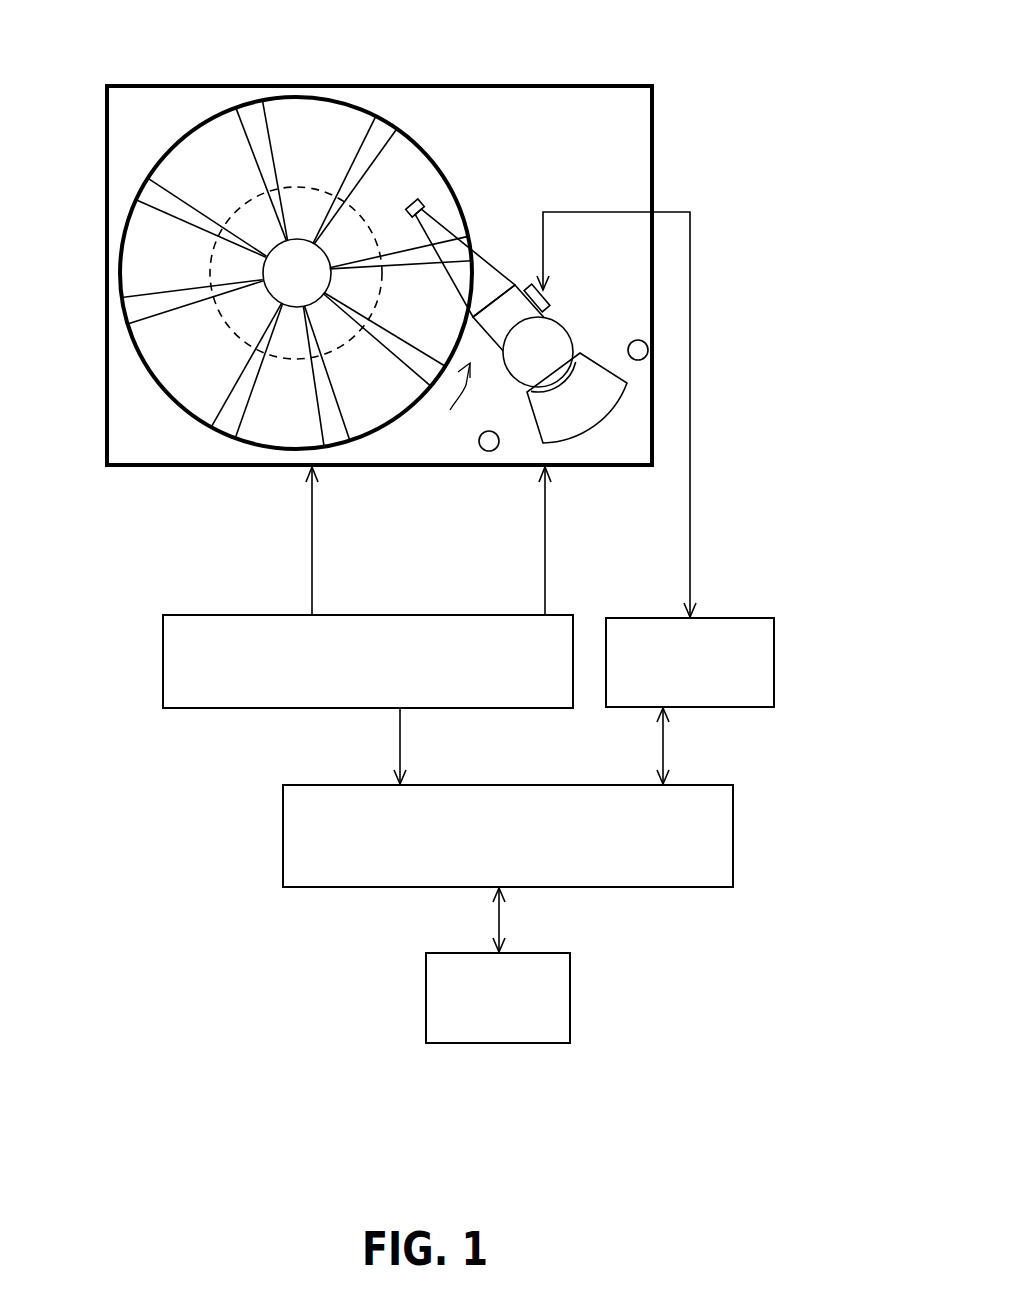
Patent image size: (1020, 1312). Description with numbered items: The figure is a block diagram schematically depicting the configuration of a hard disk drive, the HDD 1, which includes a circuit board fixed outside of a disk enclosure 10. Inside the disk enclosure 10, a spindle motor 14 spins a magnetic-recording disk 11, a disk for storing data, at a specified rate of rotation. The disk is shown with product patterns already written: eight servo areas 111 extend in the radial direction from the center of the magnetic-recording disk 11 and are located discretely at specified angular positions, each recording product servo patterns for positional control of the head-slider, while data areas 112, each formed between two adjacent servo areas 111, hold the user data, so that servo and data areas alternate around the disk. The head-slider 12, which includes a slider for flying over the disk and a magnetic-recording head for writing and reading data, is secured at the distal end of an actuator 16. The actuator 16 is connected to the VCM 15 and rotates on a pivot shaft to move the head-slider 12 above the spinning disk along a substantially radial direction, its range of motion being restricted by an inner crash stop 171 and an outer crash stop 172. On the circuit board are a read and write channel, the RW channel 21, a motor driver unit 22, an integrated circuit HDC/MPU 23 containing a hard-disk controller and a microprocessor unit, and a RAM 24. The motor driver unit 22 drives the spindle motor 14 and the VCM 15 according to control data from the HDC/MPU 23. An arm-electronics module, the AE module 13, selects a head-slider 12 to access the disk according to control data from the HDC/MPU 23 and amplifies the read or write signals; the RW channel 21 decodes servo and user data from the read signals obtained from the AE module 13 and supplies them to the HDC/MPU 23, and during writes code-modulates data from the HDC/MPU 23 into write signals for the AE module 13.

The HDD 1 is at (515, 45).
The disk enclosure 10 is at (105, 283).
The magnetic-recording disk 11 is at (349, 101).
The head-slider 12 is at (420, 201).
The arm-electronics module 13 is at (550, 300).
The spindle motor 14 is at (255, 196).
The VCM 15 is at (607, 366).
The actuator 16 is at (448, 399).
The servo area 111 is at (167, 203).
The data area 112 is at (255, 432).
The inner crash stop 171 is at (639, 362).
The outer crash stop 172 is at (482, 452).
The read and write channel 21 is at (708, 692).
The motor driver unit 22 is at (369, 700).
The HDC/MPU 23 is at (621, 854).
The RAM 24 is at (511, 1030).